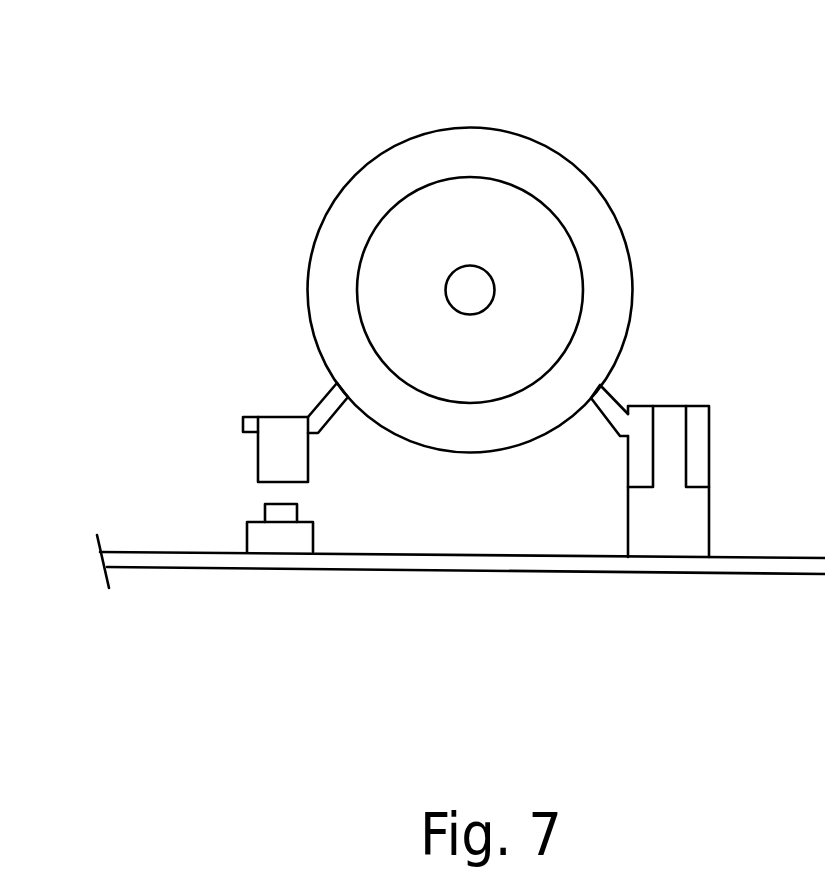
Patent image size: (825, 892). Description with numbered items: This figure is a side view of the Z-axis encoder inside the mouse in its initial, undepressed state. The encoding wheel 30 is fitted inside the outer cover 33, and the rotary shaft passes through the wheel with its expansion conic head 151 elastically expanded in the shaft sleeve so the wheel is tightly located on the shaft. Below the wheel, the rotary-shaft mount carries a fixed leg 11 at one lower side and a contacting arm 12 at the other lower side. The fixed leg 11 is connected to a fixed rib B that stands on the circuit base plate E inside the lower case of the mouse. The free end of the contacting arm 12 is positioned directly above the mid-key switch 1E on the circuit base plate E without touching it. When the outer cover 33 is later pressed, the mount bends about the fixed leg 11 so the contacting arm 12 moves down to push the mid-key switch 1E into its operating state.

The expansion conic head 151 is at (462, 283).
The outer cover 33 is at (567, 190).
The encoding wheel 30 is at (563, 290).
The contacting arm 12 is at (277, 425).
The fixed leg 11 is at (616, 401).
The fixed rib B is at (673, 512).
The mid-key switch 1E is at (267, 535).
The circuit base plate E is at (687, 565).